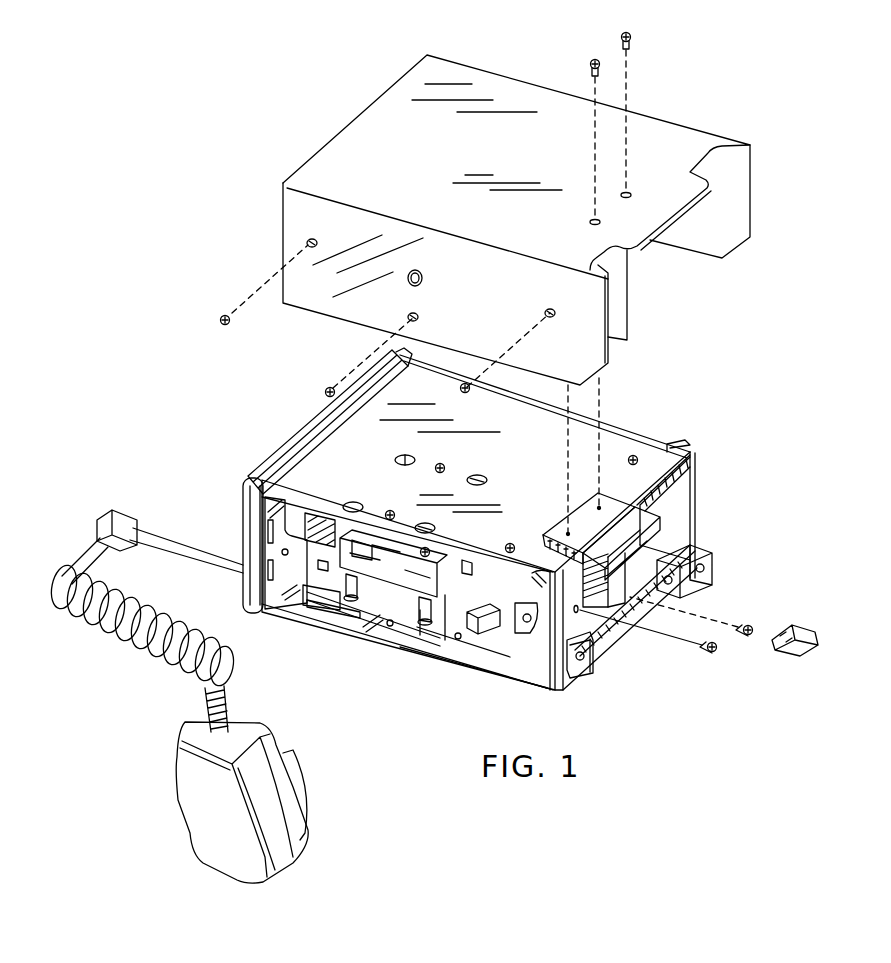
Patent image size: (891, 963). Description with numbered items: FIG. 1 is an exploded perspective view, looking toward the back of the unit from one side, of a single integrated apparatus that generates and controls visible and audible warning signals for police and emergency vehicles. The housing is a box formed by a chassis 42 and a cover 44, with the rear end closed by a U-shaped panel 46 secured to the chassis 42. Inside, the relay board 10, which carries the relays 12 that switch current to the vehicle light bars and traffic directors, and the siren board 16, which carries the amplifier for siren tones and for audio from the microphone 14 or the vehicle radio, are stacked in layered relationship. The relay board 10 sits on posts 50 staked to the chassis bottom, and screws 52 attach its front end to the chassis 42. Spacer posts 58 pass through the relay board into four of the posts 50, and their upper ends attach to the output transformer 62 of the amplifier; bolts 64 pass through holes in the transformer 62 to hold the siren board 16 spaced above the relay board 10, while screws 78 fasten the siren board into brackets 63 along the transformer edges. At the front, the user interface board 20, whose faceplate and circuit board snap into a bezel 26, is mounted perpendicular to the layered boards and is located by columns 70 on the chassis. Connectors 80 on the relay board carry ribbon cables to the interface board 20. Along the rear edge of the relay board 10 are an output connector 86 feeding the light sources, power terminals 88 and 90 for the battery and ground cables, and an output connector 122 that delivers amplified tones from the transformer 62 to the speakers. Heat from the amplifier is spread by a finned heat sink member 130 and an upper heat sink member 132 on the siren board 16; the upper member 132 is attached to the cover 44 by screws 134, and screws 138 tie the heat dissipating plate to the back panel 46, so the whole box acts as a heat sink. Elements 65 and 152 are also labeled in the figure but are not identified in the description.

The relay board 10 is at (445, 623).
The relays 12 is at (473, 627).
The microphone 14 is at (210, 823).
The siren board 16 is at (610, 447).
The user interface board 20 is at (310, 428).
The bezel 26 is at (248, 531).
The chassis 42 is at (483, 660).
The cover 44 is at (685, 133).
The U-shaped panel 46 is at (693, 523).
The posts 50 is at (320, 603).
The screws 52 is at (307, 587).
The spacer posts 58 is at (467, 565).
The output transformer 62 is at (393, 563).
The brackets 63 is at (368, 548).
The bolts 64 is at (350, 505).
The mounting holes 65 is at (398, 461).
The columns 70 is at (262, 507).
The screws 78 is at (420, 485).
The connectors 80 is at (320, 565).
The output connector 86 is at (632, 635).
The power terminal 88 is at (712, 556).
The power terminal 90 is at (583, 672).
The output connector 122 is at (690, 476).
The finned heat sink member 130 is at (687, 527).
The upper heat sink member 132 is at (585, 500).
The screws 134 is at (622, 36).
The screws 138 is at (748, 640).
The fuse 152 is at (815, 636).